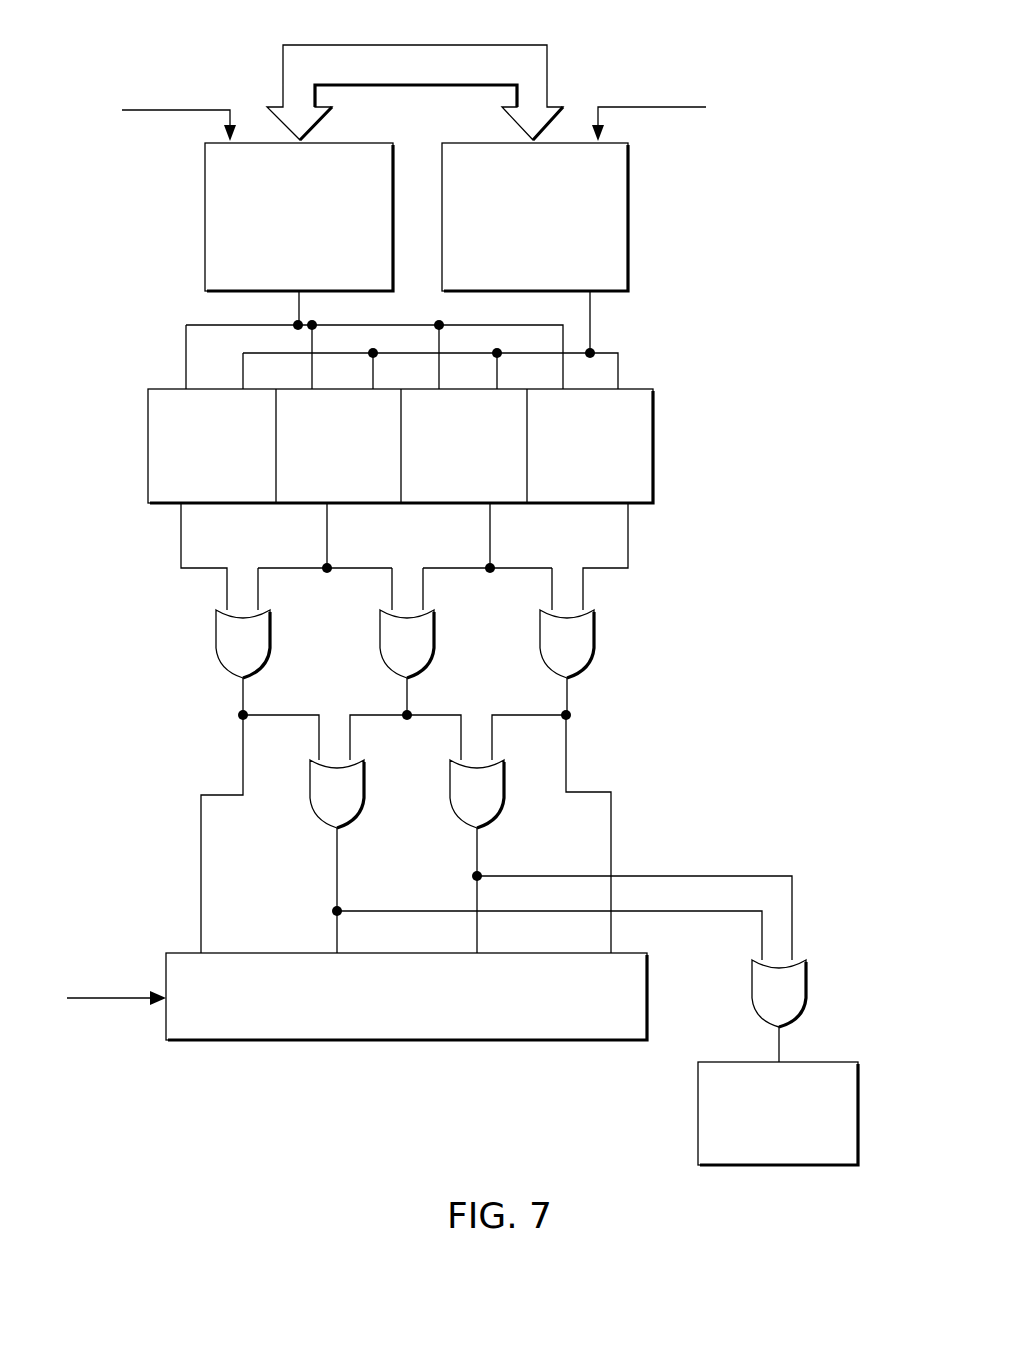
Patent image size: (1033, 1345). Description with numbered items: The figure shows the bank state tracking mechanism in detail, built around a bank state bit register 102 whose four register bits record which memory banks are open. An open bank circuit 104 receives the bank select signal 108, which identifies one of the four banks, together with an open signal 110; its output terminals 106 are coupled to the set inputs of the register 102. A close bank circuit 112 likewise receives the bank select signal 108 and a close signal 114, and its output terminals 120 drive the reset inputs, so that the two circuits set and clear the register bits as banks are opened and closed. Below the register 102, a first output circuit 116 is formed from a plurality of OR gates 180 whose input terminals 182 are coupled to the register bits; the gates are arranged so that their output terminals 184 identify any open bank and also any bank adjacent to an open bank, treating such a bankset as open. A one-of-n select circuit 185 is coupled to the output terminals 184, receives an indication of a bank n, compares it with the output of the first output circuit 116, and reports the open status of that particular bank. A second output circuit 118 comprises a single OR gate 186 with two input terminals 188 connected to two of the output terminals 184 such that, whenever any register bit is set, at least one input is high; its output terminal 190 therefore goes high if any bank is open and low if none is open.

The bank state bit register 102 is at (148, 437).
The open bank circuit 104 is at (205, 219).
The output terminal of open bank circuit 106 is at (186, 364).
The bank select signal 108 is at (438, 44).
The open signal 110 is at (177, 105).
The close bank circuit 112 is at (632, 209).
The close signal 114 is at (650, 107).
The first output circuit 116 is at (750, 712).
The second output circuit 118 is at (838, 884).
The output terminal of close bank circuit 120 is at (592, 318).
The OR gate 180 is at (226, 653).
The input terminal 182 is at (226, 586).
The output terminal 184 is at (201, 851).
The one-of-n select circuit 185 is at (513, 1042).
The OR gate 186 is at (762, 1003).
The input terminal 188 is at (762, 935).
The output terminal 190 is at (779, 1047).